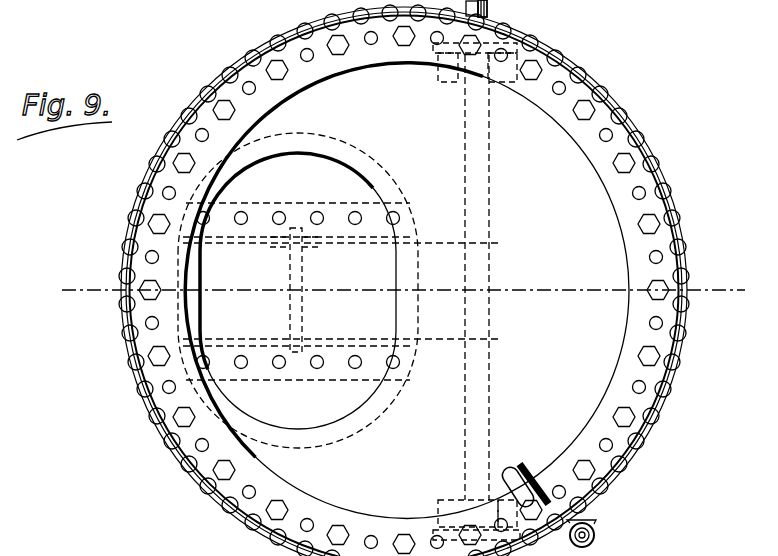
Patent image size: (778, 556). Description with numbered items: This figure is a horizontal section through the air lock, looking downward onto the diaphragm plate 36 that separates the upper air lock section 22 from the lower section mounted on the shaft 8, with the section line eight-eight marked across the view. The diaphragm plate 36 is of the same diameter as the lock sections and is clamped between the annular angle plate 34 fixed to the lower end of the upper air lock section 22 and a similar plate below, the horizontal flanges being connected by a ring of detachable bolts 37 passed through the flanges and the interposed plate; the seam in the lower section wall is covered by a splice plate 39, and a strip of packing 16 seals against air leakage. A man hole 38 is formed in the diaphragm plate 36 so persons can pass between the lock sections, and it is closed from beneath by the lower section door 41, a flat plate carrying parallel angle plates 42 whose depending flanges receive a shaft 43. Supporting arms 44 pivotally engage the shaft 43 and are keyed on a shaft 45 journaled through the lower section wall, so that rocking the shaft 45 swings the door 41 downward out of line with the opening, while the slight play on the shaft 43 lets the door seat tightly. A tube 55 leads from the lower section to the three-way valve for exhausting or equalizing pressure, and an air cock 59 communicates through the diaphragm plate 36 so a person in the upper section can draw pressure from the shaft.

The shaft 8 is at (92, 287).
The strip of packing 16 is at (503, 482).
The upper air lock section 22 is at (197, 104).
The annular angle plate 34 is at (616, 402).
The diaphragm plate 36 is at (605, 262).
The detachable bolts 37 is at (658, 360).
The man hole 38 is at (298, 308).
The splice plate 39 is at (116, 317).
The lower section door 41 is at (332, 402).
The angle plates 42 is at (264, 211).
The shaft 43 is at (304, 302).
The supporting arms 44 is at (503, 240).
The shaft 45 is at (494, 15).
The tube 55 is at (592, 541).
The air cock 59 is at (514, 466).